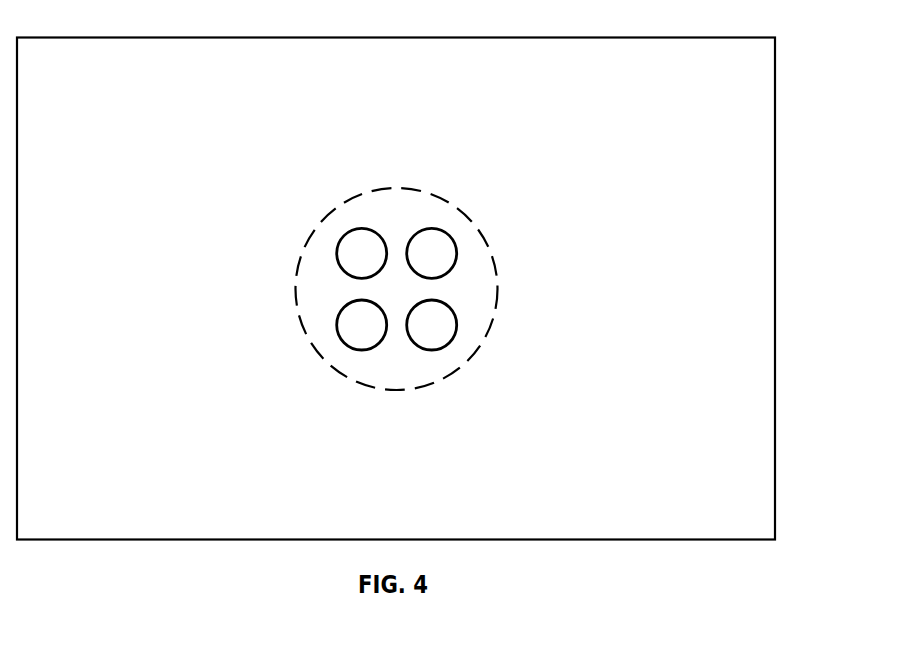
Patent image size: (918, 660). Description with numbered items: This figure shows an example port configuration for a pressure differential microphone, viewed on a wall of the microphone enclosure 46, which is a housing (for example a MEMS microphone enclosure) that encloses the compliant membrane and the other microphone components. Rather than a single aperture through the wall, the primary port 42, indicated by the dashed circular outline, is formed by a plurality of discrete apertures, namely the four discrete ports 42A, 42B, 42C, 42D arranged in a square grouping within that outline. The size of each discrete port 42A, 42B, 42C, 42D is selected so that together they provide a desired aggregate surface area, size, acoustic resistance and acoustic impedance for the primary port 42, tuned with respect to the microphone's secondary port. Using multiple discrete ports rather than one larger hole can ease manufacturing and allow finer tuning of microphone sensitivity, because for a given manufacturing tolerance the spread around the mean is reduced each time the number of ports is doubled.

The microphone enclosure 46 is at (558, 37).
The primary port 42 is at (448, 203).
The discrete port 42A is at (456, 250).
The discrete port 42B is at (455, 331).
The discrete port 42C is at (344, 240).
The discrete port 42D is at (339, 333).